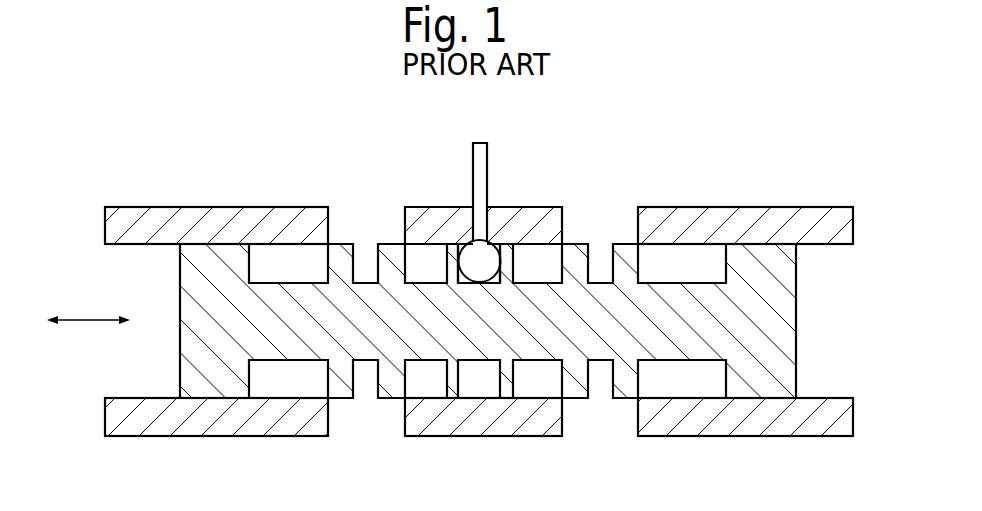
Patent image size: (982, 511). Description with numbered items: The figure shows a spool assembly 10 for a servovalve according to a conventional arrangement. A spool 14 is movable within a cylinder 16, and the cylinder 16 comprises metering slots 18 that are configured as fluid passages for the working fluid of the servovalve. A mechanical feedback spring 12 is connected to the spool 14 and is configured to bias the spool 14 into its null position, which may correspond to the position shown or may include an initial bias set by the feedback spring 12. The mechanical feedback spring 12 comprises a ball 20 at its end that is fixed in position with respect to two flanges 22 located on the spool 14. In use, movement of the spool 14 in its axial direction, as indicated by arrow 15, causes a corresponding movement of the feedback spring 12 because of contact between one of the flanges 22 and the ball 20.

The spool assembly 10 is at (145, 130).
The mechanical feedback spring 12 is at (475, 152).
The spool 14 is at (770, 290).
The arrow 15 is at (89, 320).
The cylinder 16 is at (778, 218).
The metering slots 18 is at (367, 432).
The ball 20 is at (488, 252).
The flanges 22 is at (450, 260).